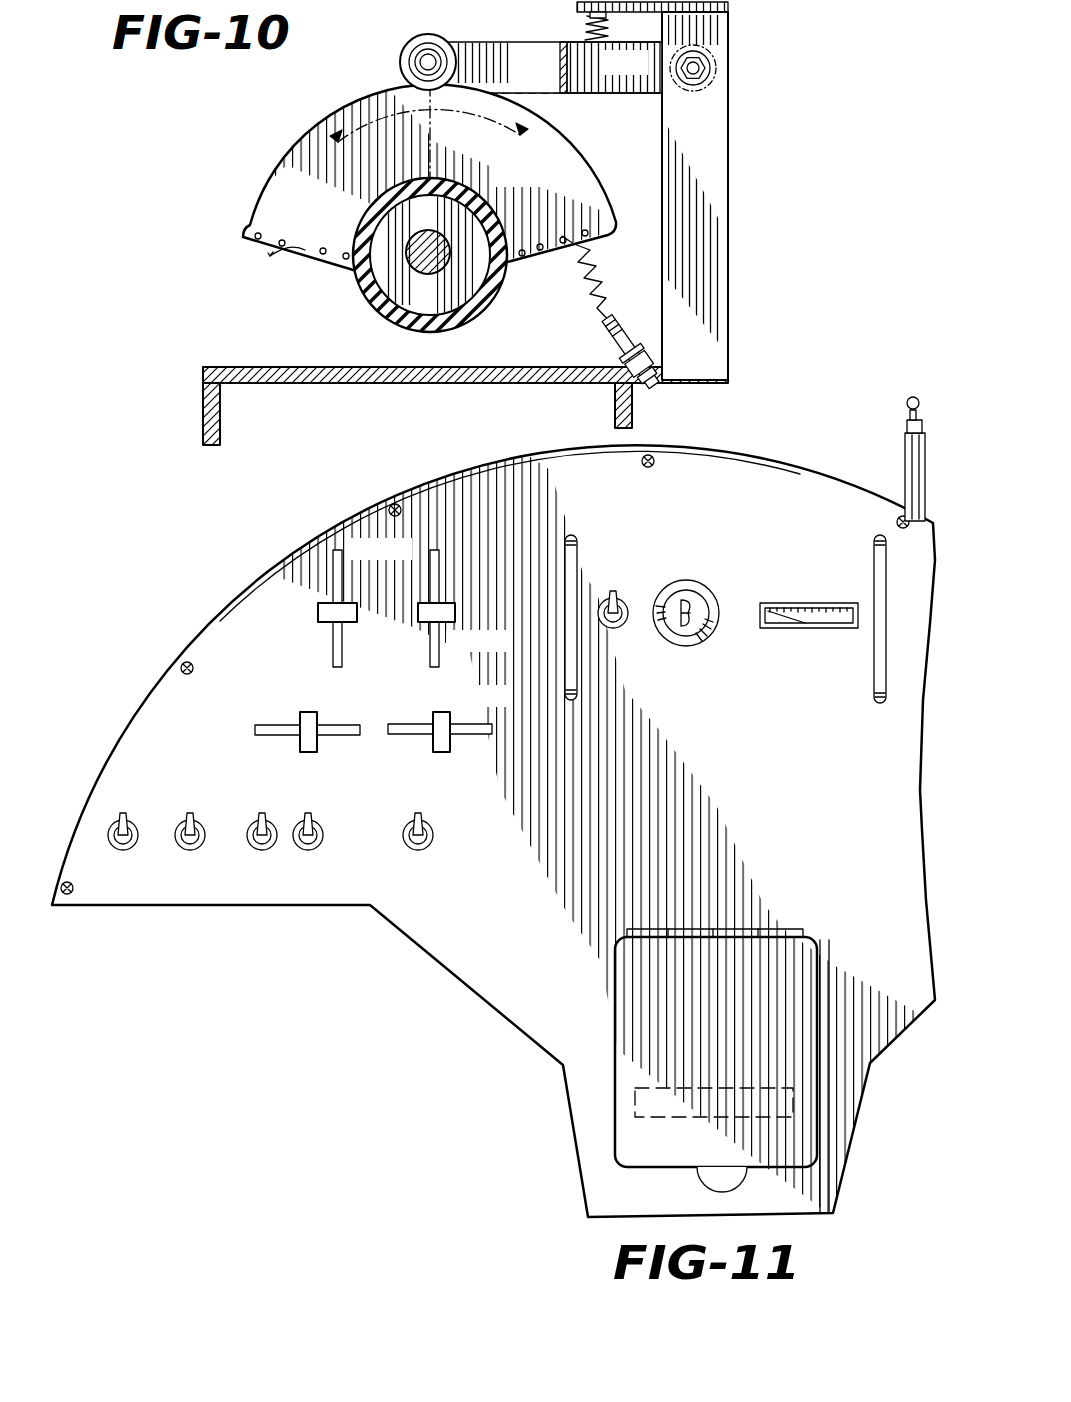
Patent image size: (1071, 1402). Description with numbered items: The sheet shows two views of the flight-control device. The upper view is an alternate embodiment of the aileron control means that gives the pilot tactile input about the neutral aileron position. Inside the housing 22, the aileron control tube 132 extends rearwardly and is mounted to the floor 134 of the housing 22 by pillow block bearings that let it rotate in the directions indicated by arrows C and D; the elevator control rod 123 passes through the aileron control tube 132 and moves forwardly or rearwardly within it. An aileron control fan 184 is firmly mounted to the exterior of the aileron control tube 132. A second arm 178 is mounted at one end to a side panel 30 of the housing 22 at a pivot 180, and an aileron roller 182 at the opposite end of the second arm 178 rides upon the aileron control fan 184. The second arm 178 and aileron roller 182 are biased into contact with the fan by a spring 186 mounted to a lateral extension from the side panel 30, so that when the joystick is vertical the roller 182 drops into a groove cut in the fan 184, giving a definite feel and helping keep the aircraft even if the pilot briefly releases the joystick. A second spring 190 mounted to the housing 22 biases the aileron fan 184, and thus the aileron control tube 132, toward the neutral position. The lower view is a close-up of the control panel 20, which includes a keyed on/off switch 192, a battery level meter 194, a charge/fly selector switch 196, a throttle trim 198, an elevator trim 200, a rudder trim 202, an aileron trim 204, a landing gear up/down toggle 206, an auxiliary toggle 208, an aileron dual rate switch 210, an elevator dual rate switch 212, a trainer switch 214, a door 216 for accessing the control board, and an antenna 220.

In FIG. 11, the control panel 20 is at (728, 817).
In FIG. 10, the housing 22 is at (736, 261).
In FIG. 10, the side panel 30 is at (707, 133).
In FIG. 10, the elevator control rod 123 is at (408, 254).
In FIG. 10, the aileron control tube 132 is at (480, 300).
In FIG. 10, the floor 134 is at (382, 346).
In FIG. 10, the second arm 178 is at (522, 46).
In FIG. 10, the pivot 180 is at (712, 68).
In FIG. 10, the aileron roller 182 is at (440, 36).
In FIG. 10, the aileron control fan 184 is at (540, 182).
In FIG. 10, the spring 186 is at (613, 52).
In FIG. 10, the second spring 190 is at (607, 250).
In FIG. 11, the keyed on/off switch 192 is at (700, 629).
In FIG. 11, the battery level meter 194 is at (848, 620).
In FIG. 11, the charge/fly selector switch 196 is at (632, 612).
In FIG. 11, the throttle trim 198 is at (358, 608).
In FIG. 11, the elevator trim 200 is at (440, 585).
In FIG. 11, the rudder trim 202 is at (272, 725).
In FIG. 11, the aileron trim 204 is at (455, 718).
In FIG. 11, the landing gear up/down toggle 206 is at (133, 815).
In FIG. 11, the auxiliary toggle 208 is at (203, 815).
In FIG. 11, the aileron dual rate switch 210 is at (255, 848).
In FIG. 11, the elevator dual rate switch 212 is at (300, 848).
In FIG. 11, the trainer switch 214 is at (406, 832).
In FIG. 11, the door 216 is at (738, 1039).
In FIG. 11, the antenna 220 is at (902, 447).